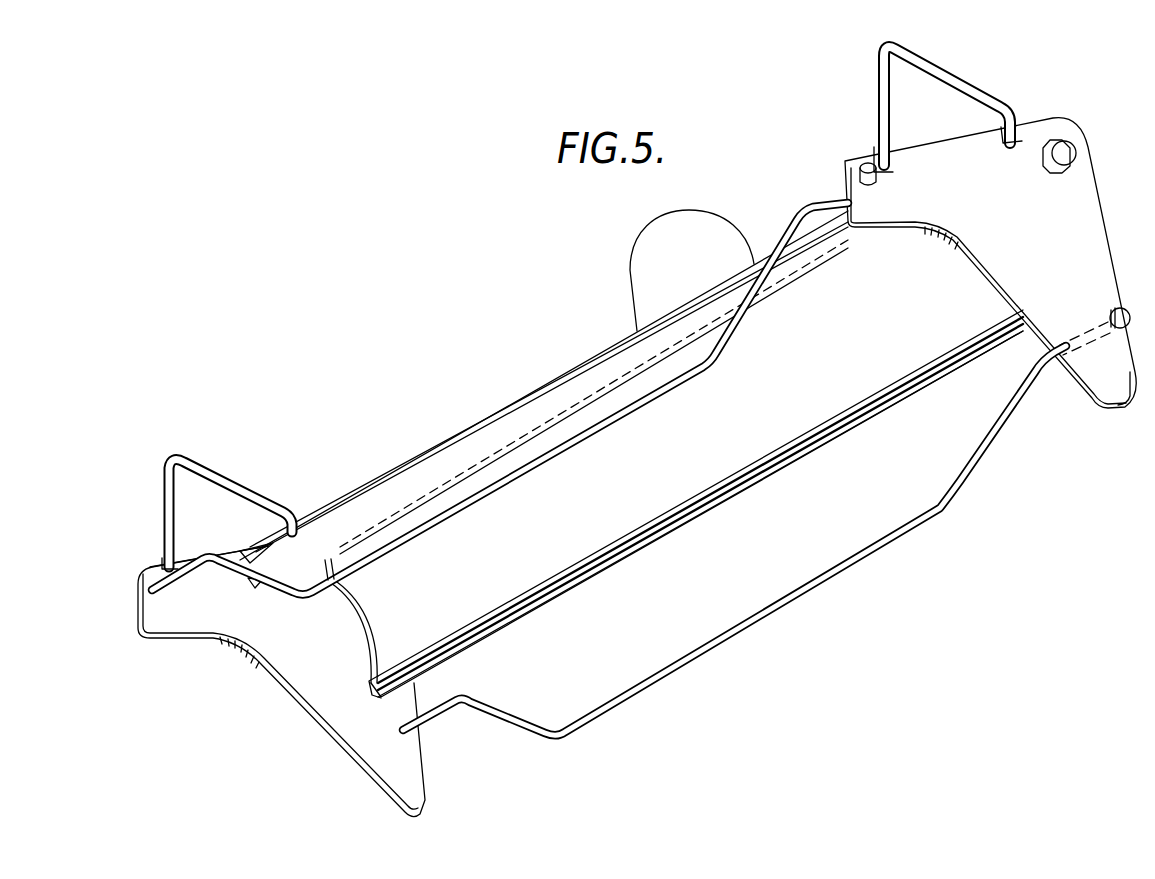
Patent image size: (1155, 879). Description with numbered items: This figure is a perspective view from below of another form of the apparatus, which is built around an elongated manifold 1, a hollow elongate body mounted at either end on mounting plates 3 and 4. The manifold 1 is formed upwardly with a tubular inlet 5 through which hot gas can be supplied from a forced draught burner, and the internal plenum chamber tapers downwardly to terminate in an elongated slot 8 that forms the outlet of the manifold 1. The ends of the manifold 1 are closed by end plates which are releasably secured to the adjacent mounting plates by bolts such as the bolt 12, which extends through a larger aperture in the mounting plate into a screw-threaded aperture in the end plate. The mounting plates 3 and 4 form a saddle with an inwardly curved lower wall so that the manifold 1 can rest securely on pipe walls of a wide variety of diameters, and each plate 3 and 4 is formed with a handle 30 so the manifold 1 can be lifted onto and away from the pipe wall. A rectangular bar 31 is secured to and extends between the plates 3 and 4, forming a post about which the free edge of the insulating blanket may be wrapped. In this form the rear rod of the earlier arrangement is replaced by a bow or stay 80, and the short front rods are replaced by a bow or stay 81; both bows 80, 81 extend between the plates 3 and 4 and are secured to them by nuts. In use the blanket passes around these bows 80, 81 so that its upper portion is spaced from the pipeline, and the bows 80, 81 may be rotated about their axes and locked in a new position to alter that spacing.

The manifold 1 is at (738, 420).
The mounting plate 3 is at (283, 653).
The mounting plate 4 is at (983, 237).
The tubular inlet 5 is at (737, 236).
The elongated slot 8 is at (493, 623).
The bolt 12 is at (1067, 163).
The handle 30 is at (878, 60).
The rectangular bar 31 is at (373, 493).
The bow or stay 80 is at (548, 456).
The bow or stay 81 is at (808, 587).